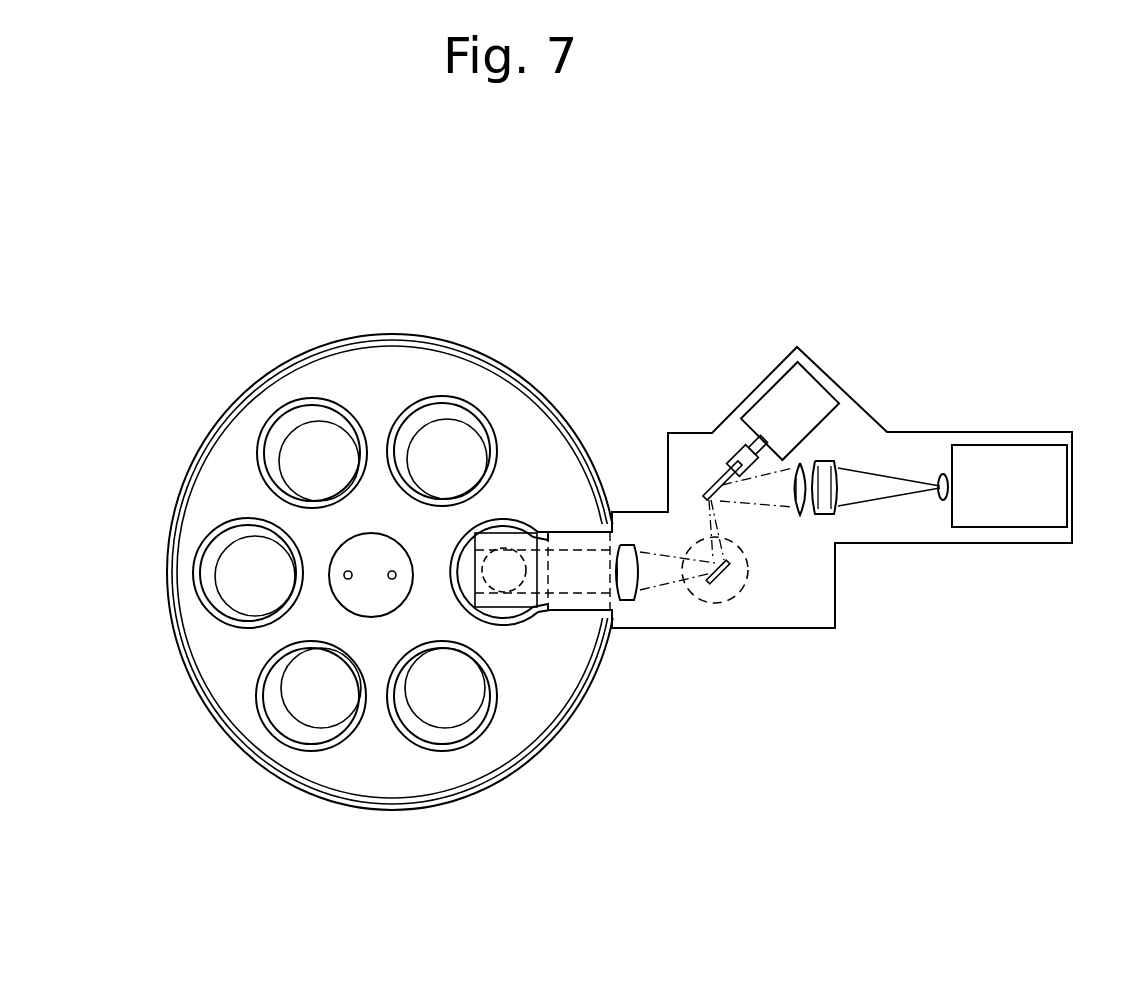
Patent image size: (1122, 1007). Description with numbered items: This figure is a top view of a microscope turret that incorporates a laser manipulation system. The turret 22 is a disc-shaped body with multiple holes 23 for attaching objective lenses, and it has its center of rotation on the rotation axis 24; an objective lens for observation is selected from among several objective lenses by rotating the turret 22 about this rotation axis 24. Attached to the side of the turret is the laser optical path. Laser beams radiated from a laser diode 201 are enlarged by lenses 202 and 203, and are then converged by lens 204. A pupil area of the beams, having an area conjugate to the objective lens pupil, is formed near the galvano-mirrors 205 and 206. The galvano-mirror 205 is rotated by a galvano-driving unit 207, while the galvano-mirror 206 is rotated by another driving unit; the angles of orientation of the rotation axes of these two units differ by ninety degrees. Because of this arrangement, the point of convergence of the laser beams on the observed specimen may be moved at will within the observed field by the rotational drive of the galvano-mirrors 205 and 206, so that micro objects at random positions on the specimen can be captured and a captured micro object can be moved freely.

The turret 22 is at (383, 765).
The holes 23 is at (323, 442).
The rotation axis 24 is at (373, 553).
The laser diode 201 is at (1037, 462).
The lens 202 is at (937, 476).
The lens 203 is at (838, 514).
The lens 204 is at (800, 515).
The galvano-mirror 205 is at (712, 490).
The galvano-mirror 206 is at (722, 583).
The galvano-driving unit 207 is at (800, 383).